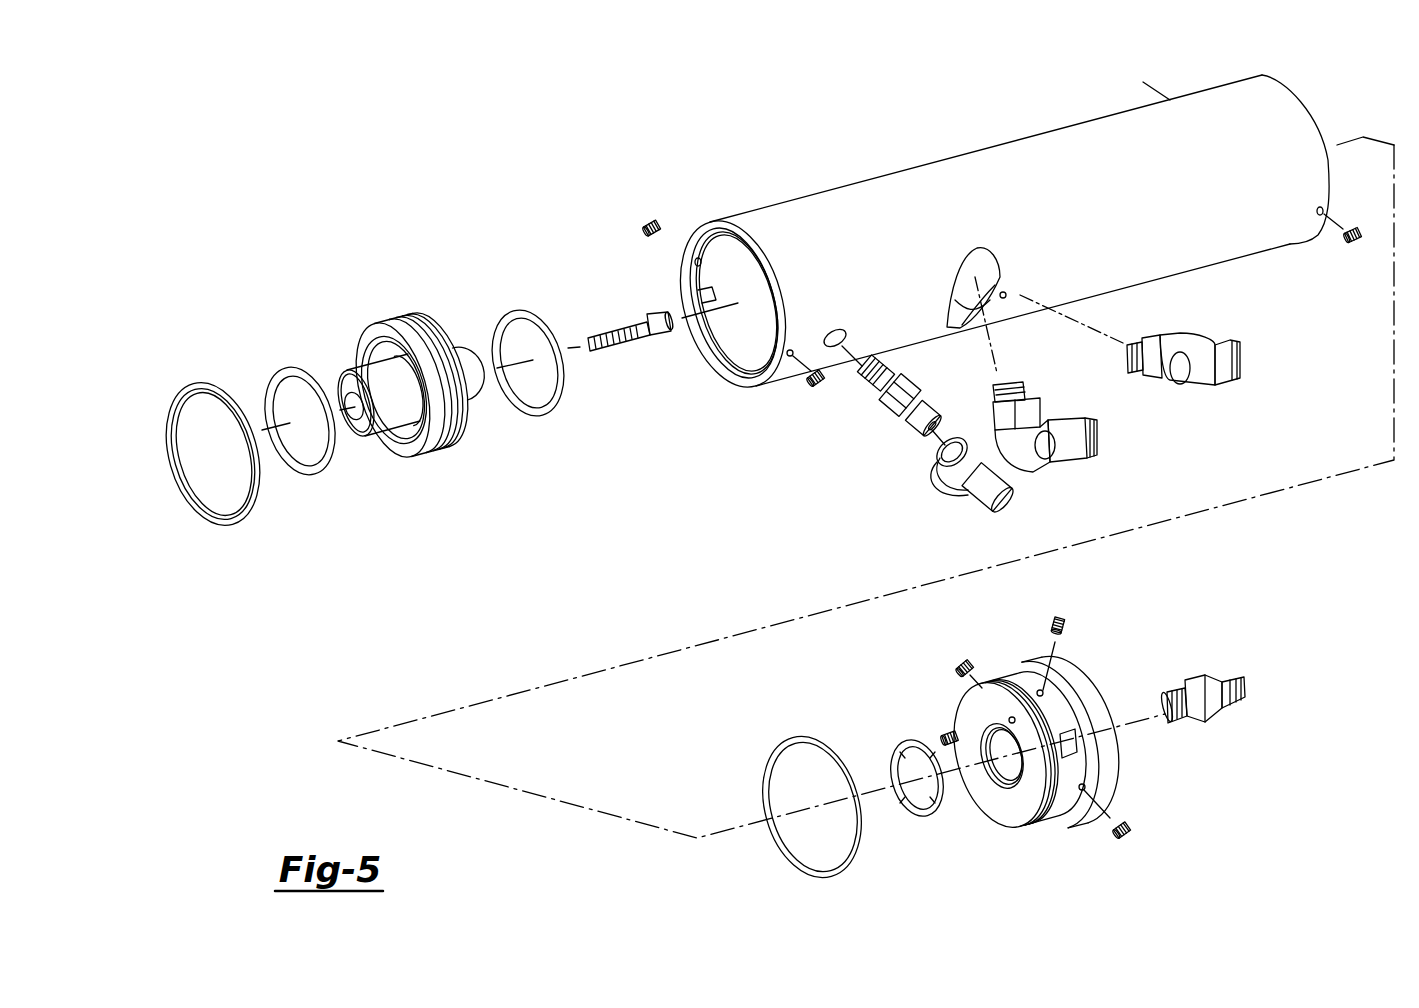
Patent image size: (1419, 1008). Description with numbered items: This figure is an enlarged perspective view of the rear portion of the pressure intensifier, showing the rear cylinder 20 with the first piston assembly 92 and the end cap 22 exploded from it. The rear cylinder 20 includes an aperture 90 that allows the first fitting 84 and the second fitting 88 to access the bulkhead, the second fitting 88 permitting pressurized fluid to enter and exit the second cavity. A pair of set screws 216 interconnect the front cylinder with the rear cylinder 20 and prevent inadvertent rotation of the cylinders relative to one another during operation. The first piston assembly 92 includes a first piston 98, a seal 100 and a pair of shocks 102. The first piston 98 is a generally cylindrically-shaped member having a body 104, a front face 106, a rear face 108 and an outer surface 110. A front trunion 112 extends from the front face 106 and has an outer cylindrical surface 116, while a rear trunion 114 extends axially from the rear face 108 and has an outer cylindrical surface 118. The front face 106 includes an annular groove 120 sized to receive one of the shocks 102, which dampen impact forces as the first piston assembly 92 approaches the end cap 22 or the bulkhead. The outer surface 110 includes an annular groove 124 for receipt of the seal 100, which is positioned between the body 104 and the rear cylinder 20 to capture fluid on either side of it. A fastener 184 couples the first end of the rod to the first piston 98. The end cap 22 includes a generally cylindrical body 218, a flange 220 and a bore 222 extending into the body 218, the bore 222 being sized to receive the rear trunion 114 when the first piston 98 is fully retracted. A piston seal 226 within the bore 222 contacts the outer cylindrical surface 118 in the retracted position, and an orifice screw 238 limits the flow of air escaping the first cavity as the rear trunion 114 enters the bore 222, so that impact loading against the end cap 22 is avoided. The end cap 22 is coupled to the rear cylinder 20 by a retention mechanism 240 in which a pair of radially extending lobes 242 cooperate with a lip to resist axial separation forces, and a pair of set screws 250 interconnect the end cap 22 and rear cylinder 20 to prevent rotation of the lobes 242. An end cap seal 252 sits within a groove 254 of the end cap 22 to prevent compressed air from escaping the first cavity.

The rear cylinder 20 is at (838, 208).
The end cap 22 is at (996, 741).
The first fitting 84 is at (1050, 465).
The second fitting 88 is at (1182, 380).
The aperture 90 is at (988, 254).
The first piston assembly 92 is at (405, 412).
The first piston 98 is at (405, 412).
The seal 100 is at (216, 386).
The shocks 102 is at (308, 472).
The body 104 is at (406, 318).
The front face 106 is at (392, 452).
The rear face 108 is at (470, 425).
The outer surface 110 is at (432, 320).
The front trunion 112 is at (345, 388).
The rear trunion 114 is at (492, 400).
The outer cylindrical surface 116 is at (375, 382).
The outer cylindrical surface 118 is at (465, 350).
The annular groove 120 is at (405, 448).
The annular groove 124 is at (349, 336).
The fastener 184 is at (624, 323).
The set screws 216 is at (652, 222).
The body 218 is at (1042, 750).
The flange 220 is at (1133, 783).
The bore 222 is at (1012, 772).
The piston seal 226 is at (915, 742).
The orifice screw 238 is at (948, 734).
The retention mechanism 240 is at (1079, 856).
The lobes 242 is at (1078, 767).
The set screws 250 is at (963, 662).
The end cap seal 252 is at (790, 737).
The groove 254 is at (1045, 822).